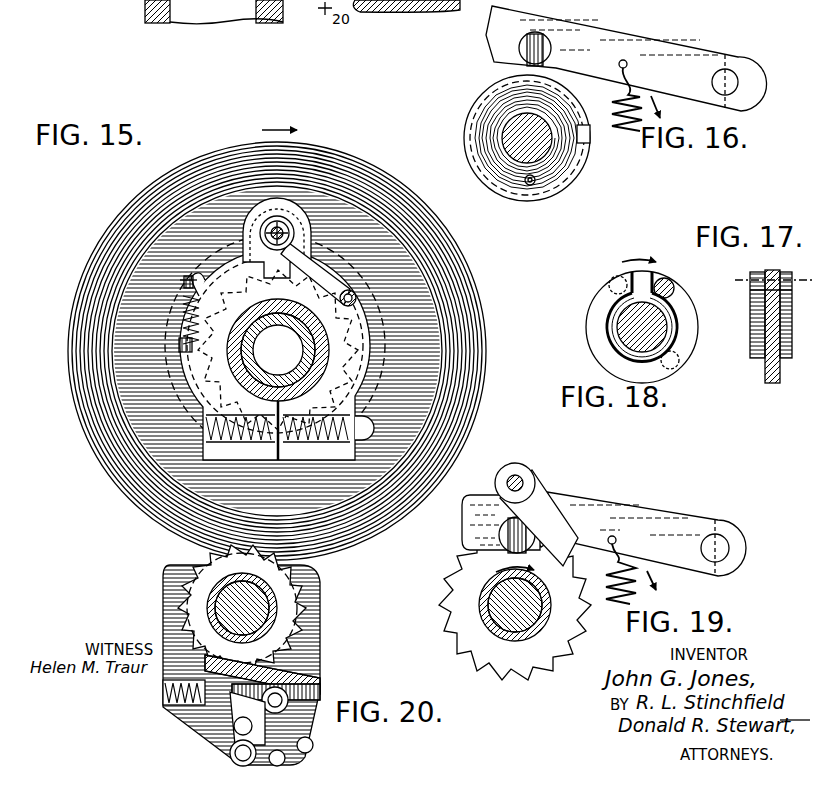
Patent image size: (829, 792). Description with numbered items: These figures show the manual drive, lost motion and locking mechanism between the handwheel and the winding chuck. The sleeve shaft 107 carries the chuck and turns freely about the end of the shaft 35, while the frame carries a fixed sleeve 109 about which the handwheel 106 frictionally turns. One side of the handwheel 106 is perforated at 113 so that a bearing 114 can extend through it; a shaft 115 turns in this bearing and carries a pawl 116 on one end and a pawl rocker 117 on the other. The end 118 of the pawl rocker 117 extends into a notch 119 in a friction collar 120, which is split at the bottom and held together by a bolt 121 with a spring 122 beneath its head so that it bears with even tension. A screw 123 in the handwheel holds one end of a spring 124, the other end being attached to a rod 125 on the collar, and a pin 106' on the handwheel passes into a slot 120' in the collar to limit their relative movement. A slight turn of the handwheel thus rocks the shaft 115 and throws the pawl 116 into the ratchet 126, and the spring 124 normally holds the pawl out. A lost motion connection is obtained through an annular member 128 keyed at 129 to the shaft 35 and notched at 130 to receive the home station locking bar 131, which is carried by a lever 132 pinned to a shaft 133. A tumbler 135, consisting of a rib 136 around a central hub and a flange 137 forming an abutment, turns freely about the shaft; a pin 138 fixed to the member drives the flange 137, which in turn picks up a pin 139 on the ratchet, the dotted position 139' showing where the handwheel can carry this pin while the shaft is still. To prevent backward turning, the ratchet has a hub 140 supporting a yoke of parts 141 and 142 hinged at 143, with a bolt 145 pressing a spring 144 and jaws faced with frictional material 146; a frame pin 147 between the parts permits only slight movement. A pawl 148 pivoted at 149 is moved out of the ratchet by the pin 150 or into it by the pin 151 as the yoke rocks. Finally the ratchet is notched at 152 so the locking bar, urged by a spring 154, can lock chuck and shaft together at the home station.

In FIG. 16, the shaft 35 is at (515, 125).
In FIG. 18, the shaft 35 is at (625, 322).
In FIG. 19, the shaft 35 is at (540, 607).
In FIG. 15, the handwheel 106 is at (277, 351).
In FIG. 15, the pin 106' is at (478, 294).
In FIG. 15, the sleeve shaft 107 is at (318, 362).
In FIG. 19, the sleeve shaft 107 is at (480, 603).
In FIG. 20, the sleeve shaft 107 is at (215, 590).
In FIG. 15, the sleeve 109 is at (325, 380).
In FIG. 15, the perforation 113 is at (378, 180).
In FIG. 15, the bearing 114 is at (308, 148).
In FIG. 15, the shaft 115 is at (272, 226).
In FIG. 19, the shaft 115 is at (505, 480).
In FIG. 15, the pawl 116 is at (357, 300).
In FIG. 19, the pawl 116 is at (540, 503).
In FIG. 15, the pawl rocker 117 is at (338, 240).
In FIG. 15, the end of pawl rocker 118 is at (248, 262).
In FIG. 15, the notch 119 is at (358, 287).
In FIG. 15, the friction collar 120 is at (346, 355).
In FIG. 15, the slot 120' is at (333, 345).
In FIG. 15, the bolt 121 is at (362, 430).
In FIG. 15, the spring 122 is at (350, 445).
In FIG. 15, the screw 123 is at (192, 290).
In FIG. 15, the spring 124 is at (185, 315).
In FIG. 15, the rod 125 is at (180, 345).
In FIG. 15, the ratchet 126 is at (420, 330).
In FIG. 19, the ratchet 126 is at (470, 583).
In FIG. 20, the ratchet 126 is at (195, 607).
In FIG. 16, the annular member 128 is at (498, 128).
In FIG. 16, the key 129 is at (590, 138).
In FIG. 16, the notch 130 is at (590, 143).
In FIG. 16, the home station locking bar 131 is at (520, 48).
In FIG. 19, the home station locking bar 131 is at (505, 530).
In FIG. 16, the lever 132 is at (625, 35).
In FIG. 19, the lever 132 is at (612, 510).
In FIG. 16, the shaft 133 is at (738, 82).
In FIG. 19, the shaft 133 is at (730, 546).
In FIG. 17, the tumbler 135 is at (762, 322).
In FIG. 18, the tumbler 135 is at (612, 305).
In FIG. 17, the rib 136 is at (758, 342).
In FIG. 18, the rib 136 is at (748, 342).
In FIG. 17, the flange 137 is at (780, 280).
In FIG. 18, the flange 137 is at (656, 260).
In FIG. 16, the pin 138 is at (532, 185).
In FIG. 17, the pin 138 is at (756, 298).
In FIG. 18, the pin 138 is at (624, 278).
In FIG. 17, the pin 139 is at (810, 299).
In FIG. 18, the pin 139 is at (684, 281).
In FIG. 18, the dotted position of pin 139' is at (694, 364).
In FIG. 20, the hub 140 is at (300, 568).
In FIG. 20, the yoke part 141 is at (320, 640).
In FIG. 20, the yoke part 142 is at (180, 625).
In FIG. 20, the hinge 143 is at (230, 752).
In FIG. 20, the spring 144 is at (175, 712).
In FIG. 20, the bolt 145 is at (163, 692).
In FIG. 20, the frictional material 146 is at (300, 608).
In FIG. 20, the pin 147 is at (232, 730).
In FIG. 20, the pawl 148 is at (285, 698).
In FIG. 20, the pivot 149 is at (300, 692).
In FIG. 20, the pin 150 is at (287, 758).
In FIG. 20, the pin 151 is at (314, 745).
In FIG. 15, the notch 152 is at (186, 278).
In FIG. 19, the notch 152 is at (500, 557).
In FIG. 16, the spring 154 is at (656, 112).
In FIG. 19, the spring 154 is at (636, 585).